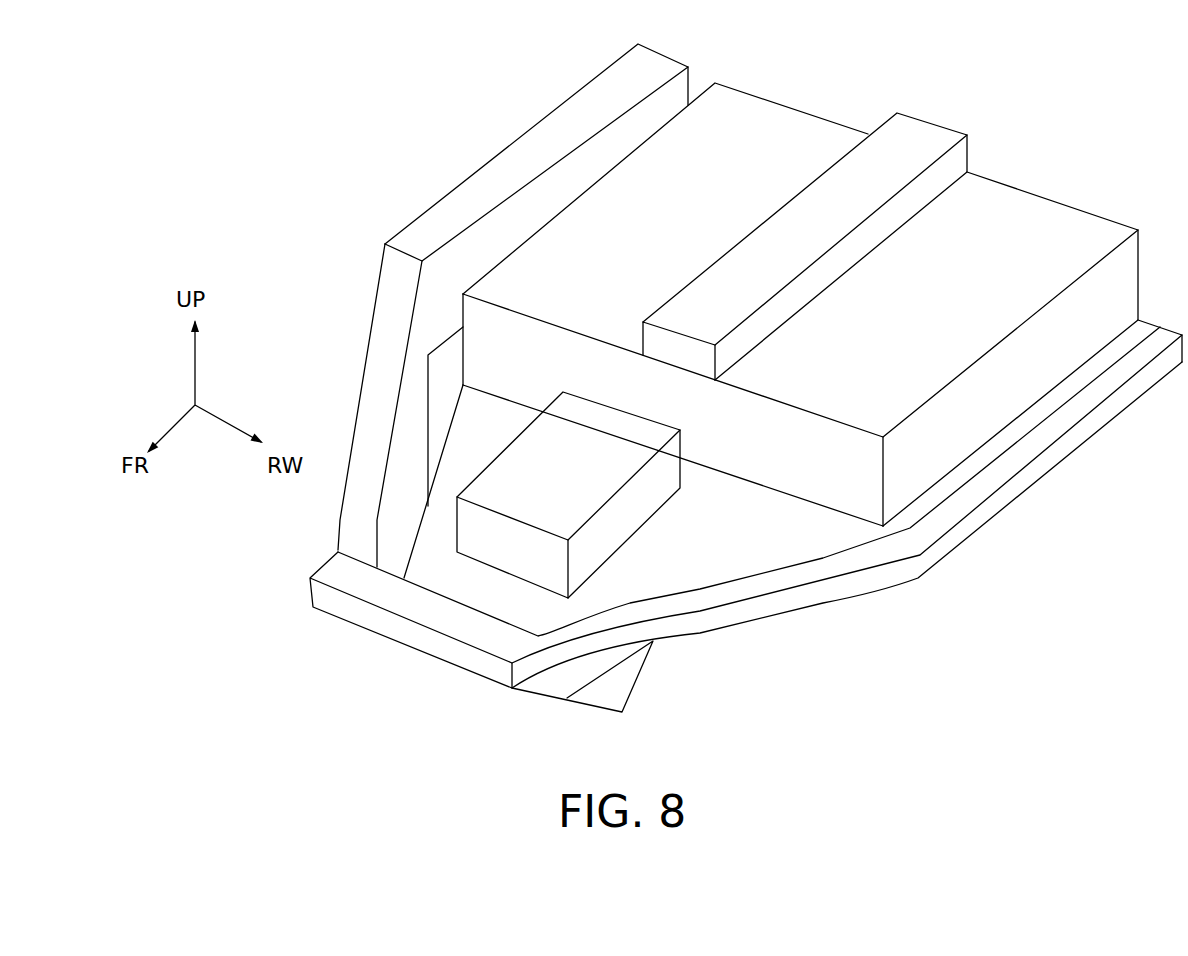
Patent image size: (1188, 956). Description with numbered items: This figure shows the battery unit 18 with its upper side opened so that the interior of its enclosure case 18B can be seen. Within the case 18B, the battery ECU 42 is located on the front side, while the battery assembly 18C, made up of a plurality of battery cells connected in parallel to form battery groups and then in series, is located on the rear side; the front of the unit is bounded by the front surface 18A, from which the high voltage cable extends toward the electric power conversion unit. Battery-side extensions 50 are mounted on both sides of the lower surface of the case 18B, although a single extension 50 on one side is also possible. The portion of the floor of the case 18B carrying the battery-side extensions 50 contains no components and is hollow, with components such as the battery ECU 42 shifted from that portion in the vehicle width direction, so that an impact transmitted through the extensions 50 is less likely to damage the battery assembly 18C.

The battery unit 18 is at (372, 213).
The front surface 18A is at (412, 630).
The case 18B is at (795, 553).
The battery assembly 18C is at (920, 443).
The battery ECU 42 is at (625, 507).
The battery-side extension 50 is at (612, 667).